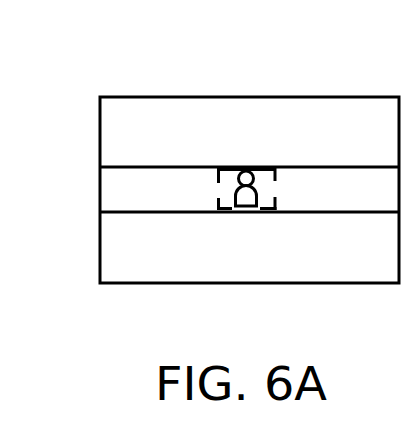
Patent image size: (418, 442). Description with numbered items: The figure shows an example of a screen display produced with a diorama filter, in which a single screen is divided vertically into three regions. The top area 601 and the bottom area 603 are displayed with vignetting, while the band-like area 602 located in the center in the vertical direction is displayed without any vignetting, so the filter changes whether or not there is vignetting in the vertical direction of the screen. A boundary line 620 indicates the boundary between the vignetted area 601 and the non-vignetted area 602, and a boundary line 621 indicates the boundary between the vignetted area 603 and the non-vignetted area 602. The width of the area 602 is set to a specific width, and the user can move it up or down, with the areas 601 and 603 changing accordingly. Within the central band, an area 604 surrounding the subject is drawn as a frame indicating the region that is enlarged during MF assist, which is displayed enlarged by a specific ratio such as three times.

The area 601 is at (110, 96).
The area 602 is at (118, 198).
The area 603 is at (120, 258).
The area surrounding the subject 604 is at (224, 178).
The boundary line 620 is at (332, 165).
The boundary line 621 is at (326, 215).